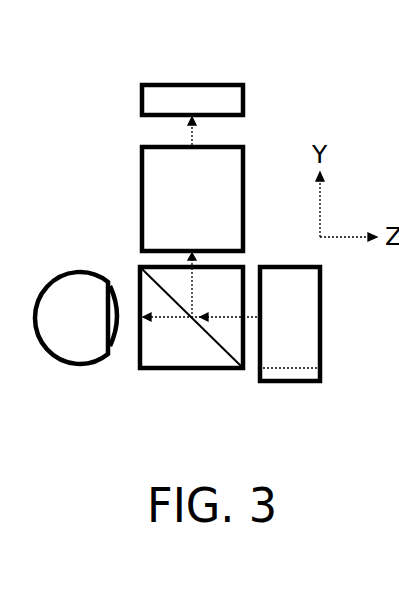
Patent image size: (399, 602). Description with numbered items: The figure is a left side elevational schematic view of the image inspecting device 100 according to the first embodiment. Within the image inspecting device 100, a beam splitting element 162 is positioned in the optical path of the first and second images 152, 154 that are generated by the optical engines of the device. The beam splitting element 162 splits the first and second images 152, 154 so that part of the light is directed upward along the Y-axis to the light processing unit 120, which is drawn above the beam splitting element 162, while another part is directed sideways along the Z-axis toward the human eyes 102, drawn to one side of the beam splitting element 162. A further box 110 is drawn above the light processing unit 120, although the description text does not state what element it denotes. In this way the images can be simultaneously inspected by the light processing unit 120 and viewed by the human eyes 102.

The image inspecting device 100 is at (134, 76).
The image source 110 is at (245, 100).
The light processing unit 120 is at (250, 147).
The beam splitting element 162 is at (207, 333).
The first image 152 is at (244, 344).
The second image 154 is at (230, 320).
The human eyes 102 is at (83, 363).